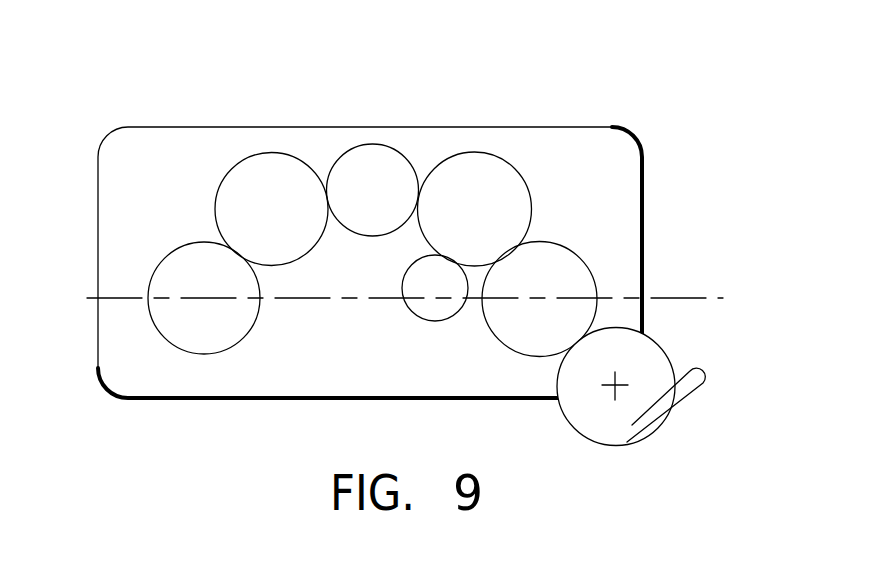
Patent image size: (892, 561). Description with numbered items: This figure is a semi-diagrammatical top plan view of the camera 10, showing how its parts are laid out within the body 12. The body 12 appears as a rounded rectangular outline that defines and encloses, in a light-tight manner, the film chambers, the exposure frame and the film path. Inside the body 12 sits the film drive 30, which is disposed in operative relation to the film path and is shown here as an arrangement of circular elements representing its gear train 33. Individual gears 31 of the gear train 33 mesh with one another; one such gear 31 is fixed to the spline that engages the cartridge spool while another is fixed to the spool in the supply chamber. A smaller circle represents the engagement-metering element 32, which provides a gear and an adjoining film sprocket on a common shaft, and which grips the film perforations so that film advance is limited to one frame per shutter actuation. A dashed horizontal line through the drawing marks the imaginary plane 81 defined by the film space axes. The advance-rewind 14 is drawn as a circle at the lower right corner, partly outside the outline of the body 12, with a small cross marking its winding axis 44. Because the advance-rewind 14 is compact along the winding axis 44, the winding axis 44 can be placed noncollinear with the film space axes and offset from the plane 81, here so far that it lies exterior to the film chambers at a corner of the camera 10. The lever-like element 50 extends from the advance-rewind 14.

The camera 10 is at (150, 85).
The body 12 is at (577, 127).
The advance-rewind 14 is at (665, 353).
The film drive 30 is at (407, 112).
The gear 31 is at (320, 243).
The engagement-metering element 32 is at (433, 321).
The gear train 33 is at (531, 203).
The winding axis 44 is at (612, 388).
The lever / stylus 50 is at (700, 389).
The imaginary plane 81 is at (668, 298).